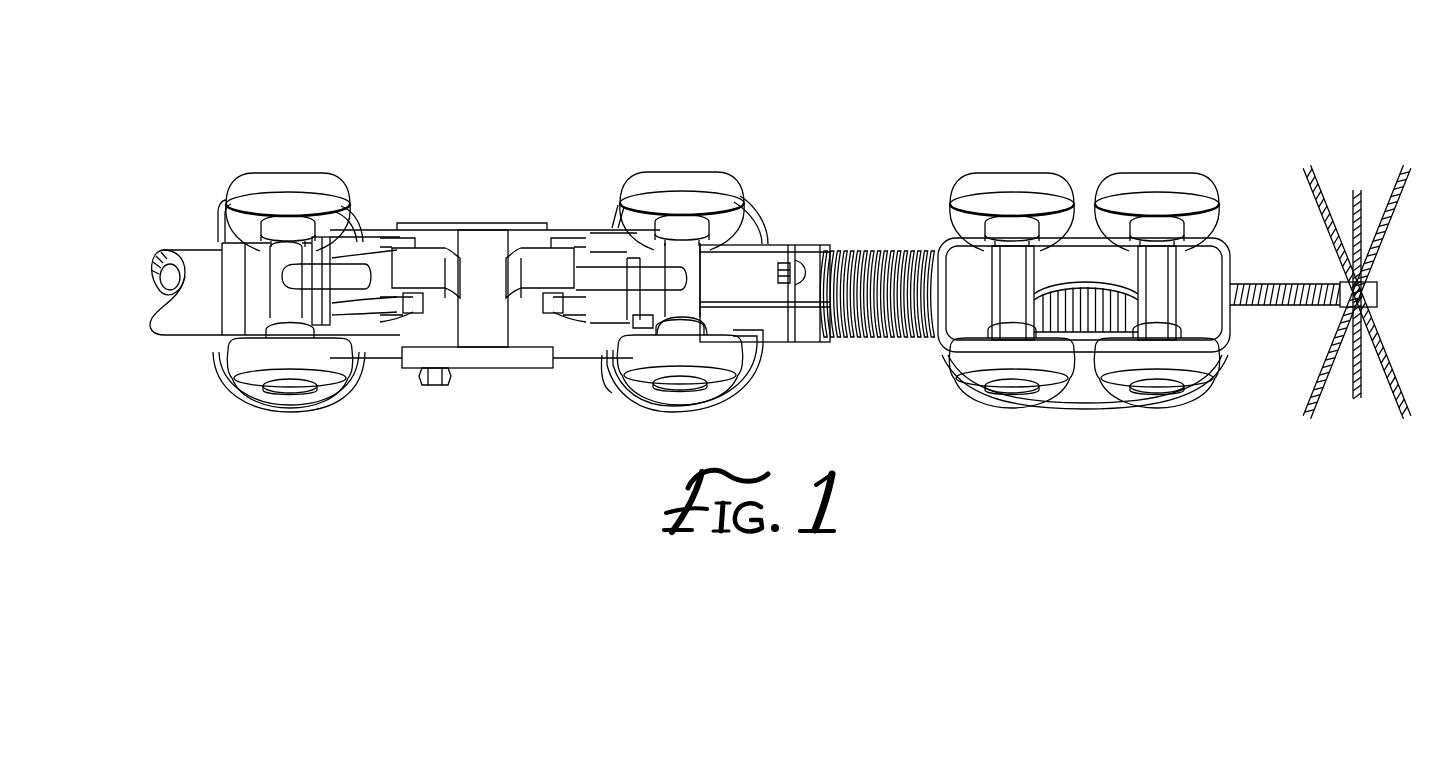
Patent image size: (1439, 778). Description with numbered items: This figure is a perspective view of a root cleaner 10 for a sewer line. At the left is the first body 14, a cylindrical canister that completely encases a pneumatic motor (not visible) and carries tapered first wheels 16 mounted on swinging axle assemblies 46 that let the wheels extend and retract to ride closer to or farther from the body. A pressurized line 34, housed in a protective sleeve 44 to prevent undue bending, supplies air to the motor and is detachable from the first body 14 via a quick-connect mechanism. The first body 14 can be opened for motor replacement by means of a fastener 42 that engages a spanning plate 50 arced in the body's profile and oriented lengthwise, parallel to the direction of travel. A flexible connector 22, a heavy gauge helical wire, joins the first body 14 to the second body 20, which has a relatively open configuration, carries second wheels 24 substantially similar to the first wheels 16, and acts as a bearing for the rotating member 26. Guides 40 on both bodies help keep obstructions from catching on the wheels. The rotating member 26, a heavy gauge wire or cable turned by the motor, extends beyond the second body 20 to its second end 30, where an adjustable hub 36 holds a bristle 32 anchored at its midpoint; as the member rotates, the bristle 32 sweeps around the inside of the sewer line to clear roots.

The root cleaner 10 is at (343, 68).
The first body 14 is at (563, 228).
The first wheel 16 is at (688, 172).
The second body 20 is at (955, 265).
The flexible connector 22 is at (850, 250).
The second wheel 24 is at (1010, 173).
The rotating member 26 is at (1275, 284).
The second end 30 is at (1339, 264).
The bristle 32 is at (1400, 185).
The pressurized line 34 is at (138, 290).
The adjustable hub 36 is at (1370, 296).
The guide 40 is at (766, 238).
The fastener 42 is at (437, 387).
The sleeve 44 is at (200, 265).
The swinging axle assembly 46 is at (589, 214).
The spanning plate 50 is at (485, 352).